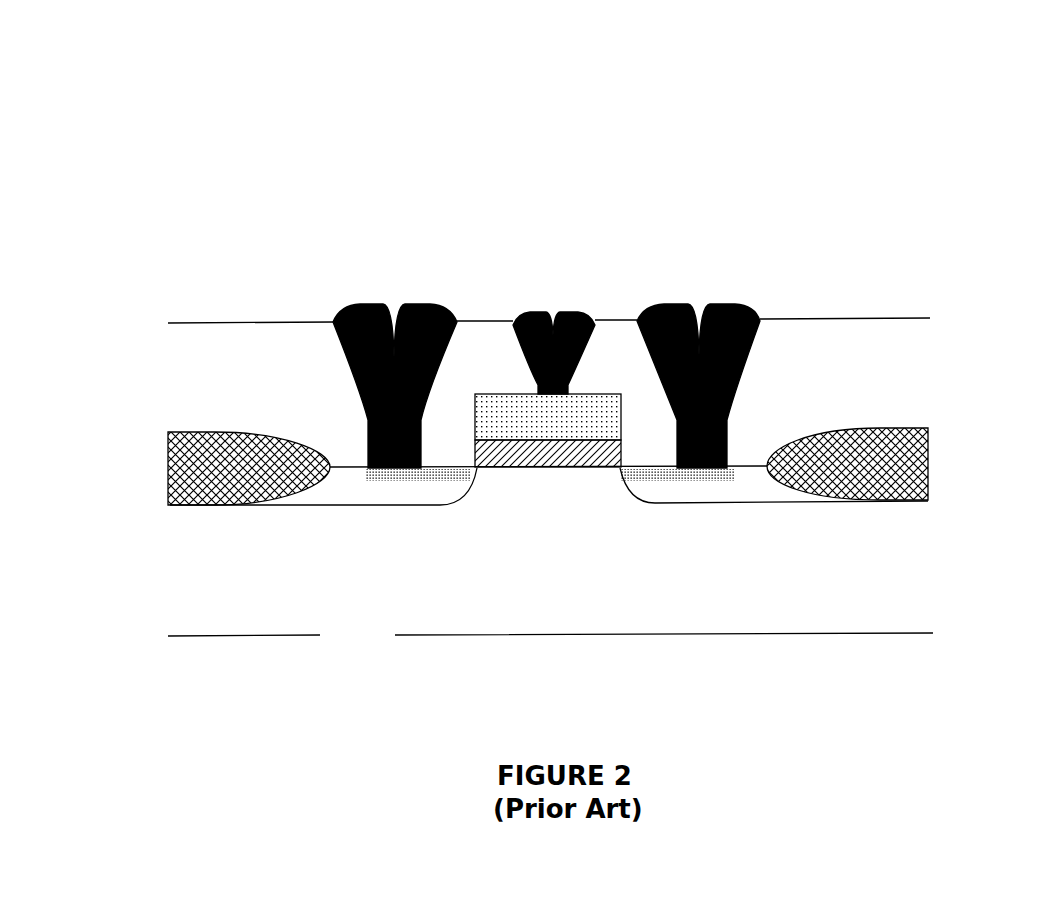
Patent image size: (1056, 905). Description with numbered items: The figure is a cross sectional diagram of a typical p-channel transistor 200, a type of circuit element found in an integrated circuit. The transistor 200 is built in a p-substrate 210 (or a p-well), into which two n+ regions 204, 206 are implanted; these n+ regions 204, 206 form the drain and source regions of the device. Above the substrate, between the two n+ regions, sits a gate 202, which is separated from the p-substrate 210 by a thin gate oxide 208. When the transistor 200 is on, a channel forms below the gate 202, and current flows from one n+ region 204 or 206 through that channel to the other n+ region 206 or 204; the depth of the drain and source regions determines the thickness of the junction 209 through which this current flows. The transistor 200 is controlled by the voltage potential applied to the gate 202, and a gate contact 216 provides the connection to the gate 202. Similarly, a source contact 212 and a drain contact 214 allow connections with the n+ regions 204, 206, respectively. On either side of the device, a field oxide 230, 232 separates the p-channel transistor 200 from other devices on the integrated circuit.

The p-channel transistor 200 is at (915, 115).
The gate 202 is at (500, 390).
The n+ region 204 is at (437, 502).
The n+ region 206 is at (738, 502).
The gate oxide 208 is at (561, 453).
The junction 209 is at (503, 476).
The p-substrate 210 is at (597, 617).
The source contact 212 is at (390, 303).
The drain contact 214 is at (700, 305).
The gate contact 216 is at (555, 308).
The field oxide 230 is at (182, 522).
The field oxide 232 is at (935, 555).